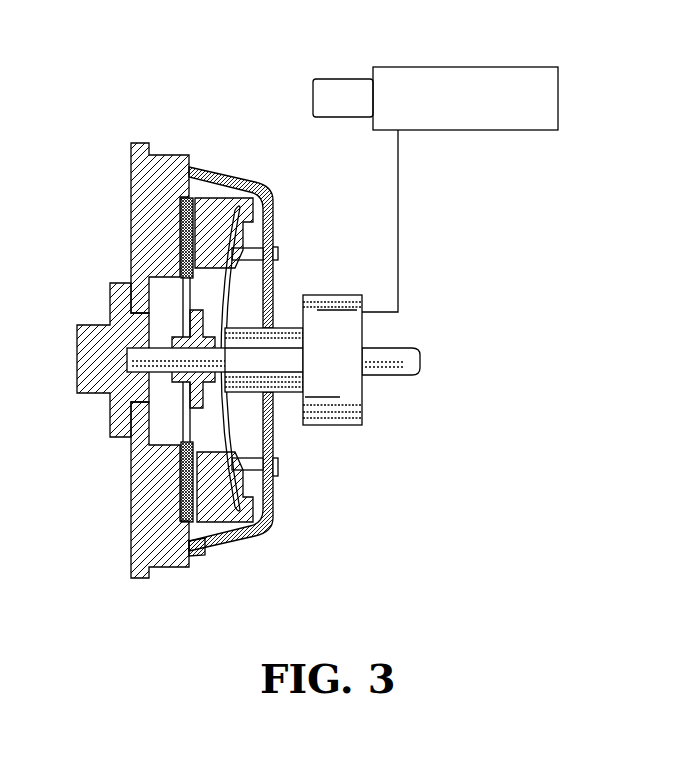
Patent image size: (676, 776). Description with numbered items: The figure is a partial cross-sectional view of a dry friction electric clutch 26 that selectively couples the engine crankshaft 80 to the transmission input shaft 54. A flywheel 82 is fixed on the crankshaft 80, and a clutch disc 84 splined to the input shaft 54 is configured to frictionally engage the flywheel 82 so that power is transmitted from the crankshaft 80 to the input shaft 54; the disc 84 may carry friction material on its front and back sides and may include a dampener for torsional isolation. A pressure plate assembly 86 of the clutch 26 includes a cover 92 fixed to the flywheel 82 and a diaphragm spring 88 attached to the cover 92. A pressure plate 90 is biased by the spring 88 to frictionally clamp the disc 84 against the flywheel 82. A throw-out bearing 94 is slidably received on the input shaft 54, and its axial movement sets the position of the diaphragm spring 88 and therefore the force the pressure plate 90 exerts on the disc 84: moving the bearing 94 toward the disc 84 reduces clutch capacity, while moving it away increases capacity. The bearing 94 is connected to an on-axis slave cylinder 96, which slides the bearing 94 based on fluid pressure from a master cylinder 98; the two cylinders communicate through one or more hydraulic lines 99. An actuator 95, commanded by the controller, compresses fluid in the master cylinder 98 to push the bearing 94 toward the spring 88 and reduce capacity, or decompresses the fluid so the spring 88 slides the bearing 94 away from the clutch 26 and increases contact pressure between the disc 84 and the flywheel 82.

The electric clutch 26 is at (104, 116).
The transmission input shaft 54 is at (383, 377).
The engine crankshaft 80 is at (77, 360).
The flywheel 82 is at (150, 185).
The clutch disc 84 is at (145, 462).
The pressure plate assembly 86 is at (202, 552).
The diaphragm spring 88 is at (223, 302).
The pressure plate 90 is at (207, 233).
The cover 92 is at (230, 548).
The bearing 94 is at (282, 397).
The actuator 95 is at (343, 79).
The slave cylinder 96 is at (330, 292).
The master cylinder 98 is at (462, 67).
The hydraulic lines 99 is at (398, 220).